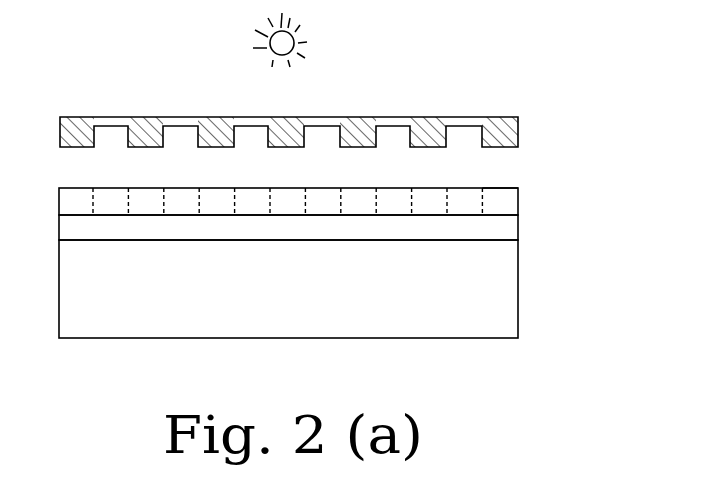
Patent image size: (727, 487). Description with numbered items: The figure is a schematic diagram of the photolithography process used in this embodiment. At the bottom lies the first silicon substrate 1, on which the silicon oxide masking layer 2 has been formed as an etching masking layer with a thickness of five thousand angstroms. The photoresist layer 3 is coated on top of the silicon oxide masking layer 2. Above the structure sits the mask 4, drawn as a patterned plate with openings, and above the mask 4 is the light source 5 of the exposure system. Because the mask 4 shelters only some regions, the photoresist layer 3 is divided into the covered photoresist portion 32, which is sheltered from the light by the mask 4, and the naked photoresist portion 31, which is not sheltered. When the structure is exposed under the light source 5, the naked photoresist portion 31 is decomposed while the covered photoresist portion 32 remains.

The first silicon substrate 1 is at (497, 285).
The silicon oxide masking layer 2 is at (497, 235).
The photoresist layer 3 is at (347, 186).
The naked photoresist portion 31 is at (465, 188).
The covered photoresist portion 32 is at (502, 188).
The mask 4 is at (500, 133).
The light source 5 is at (312, 33).